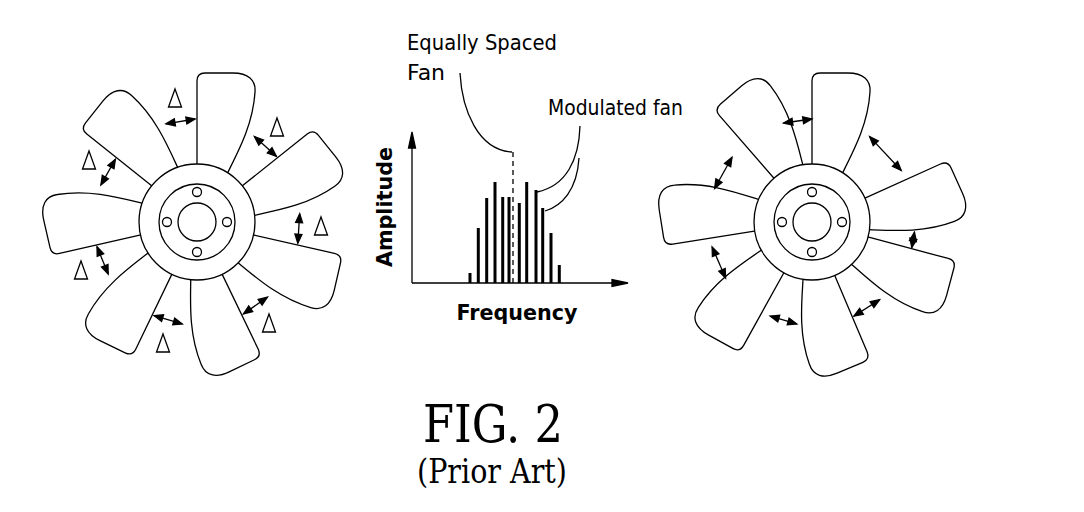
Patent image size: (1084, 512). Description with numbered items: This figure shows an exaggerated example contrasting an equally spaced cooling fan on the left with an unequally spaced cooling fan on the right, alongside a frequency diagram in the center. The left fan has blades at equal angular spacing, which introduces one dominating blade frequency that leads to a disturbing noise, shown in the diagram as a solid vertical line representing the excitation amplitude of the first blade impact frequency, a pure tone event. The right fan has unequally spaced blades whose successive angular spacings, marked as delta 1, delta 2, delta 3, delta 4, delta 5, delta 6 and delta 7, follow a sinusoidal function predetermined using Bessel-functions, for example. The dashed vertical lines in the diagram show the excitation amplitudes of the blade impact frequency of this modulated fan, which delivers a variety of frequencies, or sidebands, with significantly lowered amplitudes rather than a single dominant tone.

The angular spacing Δ1 between adjacent fan blades 1 is at (796, 102).
The angular spacing Δ2 between adjacent fan blades 2 is at (896, 144).
The angular spacing Δ3 between adjacent fan blades 3 is at (931, 244).
The angular spacing Δ4 between adjacent fan blades 4 is at (878, 322).
The angular spacing Δ5 between adjacent fan blades 5 is at (781, 338).
The angular spacing Δ6 between adjacent fan blades 6 is at (704, 267).
The angular spacing Δ7 between adjacent fan blades 7 is at (710, 167).